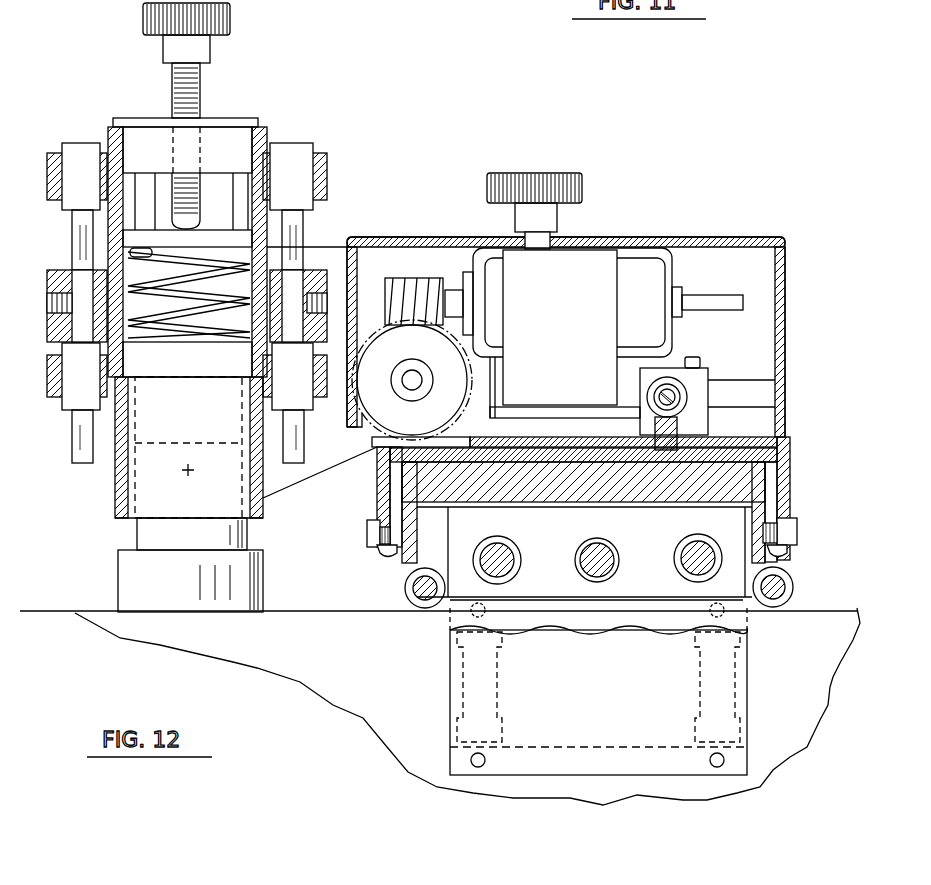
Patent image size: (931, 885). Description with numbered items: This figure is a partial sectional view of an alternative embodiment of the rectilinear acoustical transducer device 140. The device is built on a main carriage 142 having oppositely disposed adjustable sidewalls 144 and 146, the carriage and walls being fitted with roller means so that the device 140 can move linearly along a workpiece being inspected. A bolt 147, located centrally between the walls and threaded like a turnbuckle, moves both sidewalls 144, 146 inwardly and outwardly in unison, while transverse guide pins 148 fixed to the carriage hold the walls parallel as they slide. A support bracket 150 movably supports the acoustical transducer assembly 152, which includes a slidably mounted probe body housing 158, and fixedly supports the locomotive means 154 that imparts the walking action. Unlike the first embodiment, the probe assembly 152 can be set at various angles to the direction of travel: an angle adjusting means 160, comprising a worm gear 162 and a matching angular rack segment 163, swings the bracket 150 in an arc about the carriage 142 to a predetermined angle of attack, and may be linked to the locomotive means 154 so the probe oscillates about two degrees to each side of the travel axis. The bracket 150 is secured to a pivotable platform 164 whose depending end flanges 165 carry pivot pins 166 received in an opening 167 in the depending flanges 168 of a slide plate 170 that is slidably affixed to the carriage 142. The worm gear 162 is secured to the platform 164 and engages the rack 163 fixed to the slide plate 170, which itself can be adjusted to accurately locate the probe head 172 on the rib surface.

The acoustical transducer device 140 is at (449, 188).
The main carriage 142 is at (735, 488).
The adjustable sidewall 144 is at (599, 562).
The adjustable sidewall 146 is at (512, 670).
The bolt 147 is at (598, 553).
The transverse guide pins 148 is at (508, 568).
The support bracket 150 is at (288, 478).
The acoustical transducer assembly 152 is at (99, 250).
The locomotive means 154 is at (607, 255).
The probe body housing 158 is at (270, 232).
The angle adjusting means 160 is at (717, 361).
The worm gear 162 is at (688, 394).
The angular rack segment 163 is at (674, 428).
The pivotable platform 164 is at (530, 440).
The depending end flanges 165 is at (380, 500).
The pivot pins 166 is at (367, 538).
The opening 167 is at (397, 543).
The depending flanges 168 is at (373, 478).
The slide plate 170 is at (578, 452).
The probe head 172 is at (114, 576).